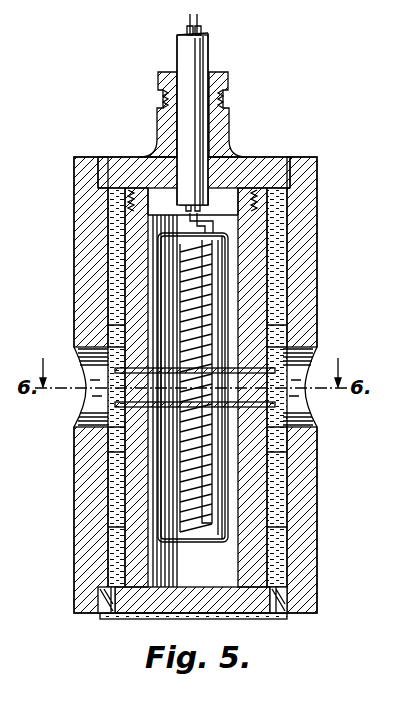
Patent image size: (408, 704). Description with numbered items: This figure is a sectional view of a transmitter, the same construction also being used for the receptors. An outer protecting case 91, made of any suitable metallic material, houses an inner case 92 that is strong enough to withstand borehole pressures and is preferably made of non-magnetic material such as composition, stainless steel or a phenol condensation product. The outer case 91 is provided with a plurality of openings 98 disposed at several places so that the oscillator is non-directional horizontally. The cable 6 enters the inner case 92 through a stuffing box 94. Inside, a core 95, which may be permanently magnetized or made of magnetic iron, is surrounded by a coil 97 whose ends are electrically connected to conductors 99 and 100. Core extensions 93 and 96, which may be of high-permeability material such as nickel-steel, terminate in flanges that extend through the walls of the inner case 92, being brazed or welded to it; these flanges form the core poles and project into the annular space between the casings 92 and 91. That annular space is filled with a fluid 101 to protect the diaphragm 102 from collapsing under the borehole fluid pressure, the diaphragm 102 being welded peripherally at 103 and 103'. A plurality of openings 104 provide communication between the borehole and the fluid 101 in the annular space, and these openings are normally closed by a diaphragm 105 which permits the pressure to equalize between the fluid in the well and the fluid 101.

The cable 6 is at (195, 59).
The outer protecting case 91 is at (317, 295).
The inner case 92 is at (128, 264).
The core extension 93 is at (228, 256).
The stuffing box 94 is at (231, 133).
The core 95 is at (209, 533).
The core extension 96 is at (227, 493).
The coil 97 is at (203, 285).
The openings 98 is at (83, 418).
The conductor 99 is at (188, 17).
The conductor 100 is at (199, 15).
The fluid 101 is at (278, 526).
The diaphragm 102 is at (288, 372).
The peripheral weld 103 is at (230, 327).
The peripheral weld 103' is at (233, 441).
The openings 104 is at (98, 614).
The diaphragm 105 is at (118, 613).